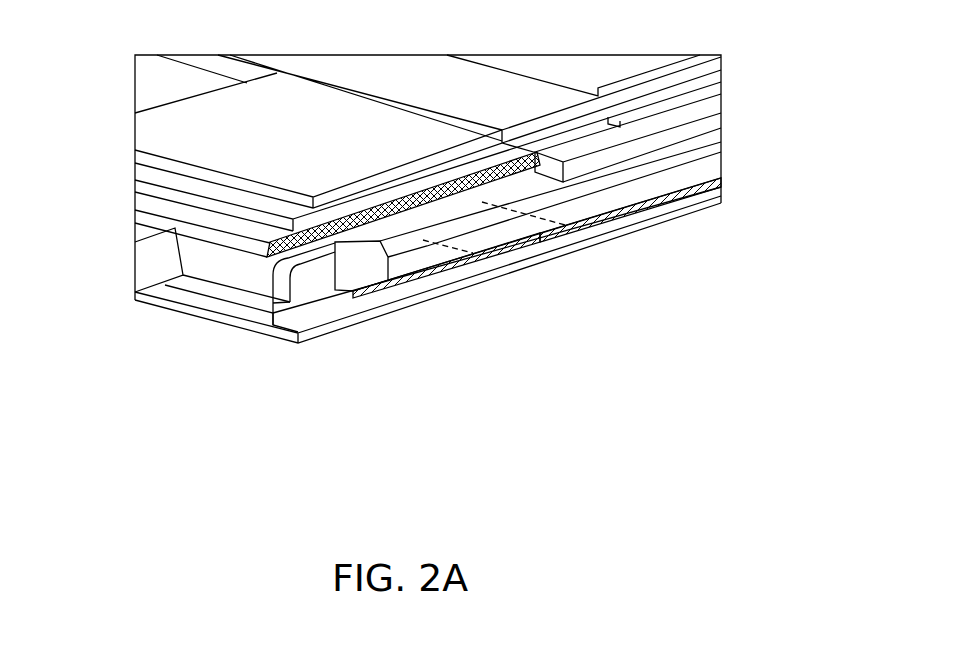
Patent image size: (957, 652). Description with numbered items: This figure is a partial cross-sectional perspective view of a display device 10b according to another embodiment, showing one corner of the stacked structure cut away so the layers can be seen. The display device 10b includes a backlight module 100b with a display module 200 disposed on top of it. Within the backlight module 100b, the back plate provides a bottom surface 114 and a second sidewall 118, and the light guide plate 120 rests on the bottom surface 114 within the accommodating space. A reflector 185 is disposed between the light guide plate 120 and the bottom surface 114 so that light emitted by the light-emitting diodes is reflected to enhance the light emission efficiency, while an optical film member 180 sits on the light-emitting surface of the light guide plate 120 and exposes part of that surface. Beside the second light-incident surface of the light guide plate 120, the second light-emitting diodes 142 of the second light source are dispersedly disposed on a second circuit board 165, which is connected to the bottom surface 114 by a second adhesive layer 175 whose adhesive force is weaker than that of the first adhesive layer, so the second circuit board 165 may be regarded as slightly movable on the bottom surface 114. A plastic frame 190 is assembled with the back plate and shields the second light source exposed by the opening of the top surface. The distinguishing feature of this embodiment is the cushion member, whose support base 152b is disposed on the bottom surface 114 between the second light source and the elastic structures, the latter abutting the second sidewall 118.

The display device 10b is at (753, 479).
The backlight module 100b is at (731, 339).
The bottom surface 114 is at (308, 333).
The second sidewall 118 is at (282, 268).
The light guide plate 120 is at (523, 223).
The second light-emitting diodes 142 is at (410, 265).
The support base 152b is at (365, 275).
The second circuit board 165 is at (492, 253).
The second adhesive layer 175 is at (580, 240).
The optical film member 180 is at (677, 133).
The reflector 185 is at (637, 213).
The plastic frame 190 is at (397, 197).
The display module 200 is at (547, 140).